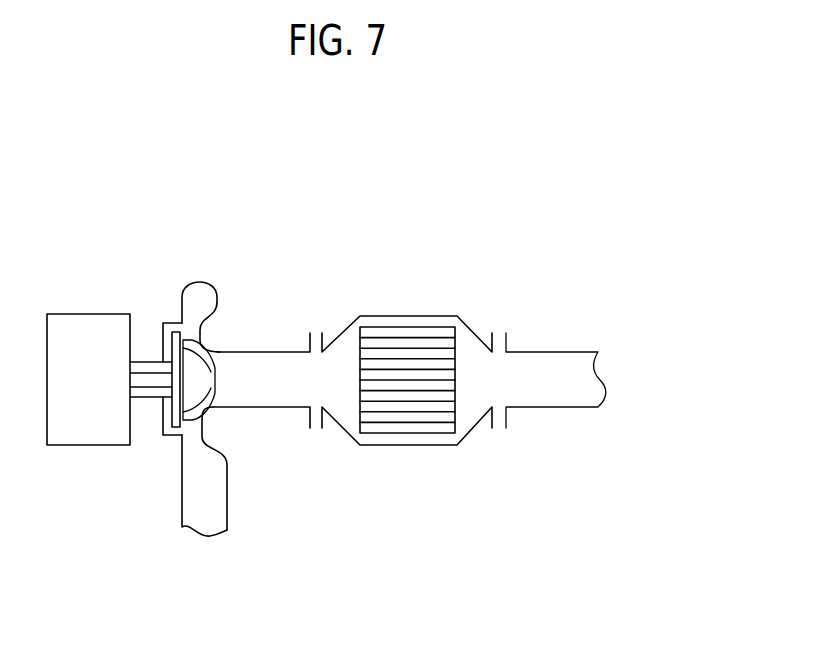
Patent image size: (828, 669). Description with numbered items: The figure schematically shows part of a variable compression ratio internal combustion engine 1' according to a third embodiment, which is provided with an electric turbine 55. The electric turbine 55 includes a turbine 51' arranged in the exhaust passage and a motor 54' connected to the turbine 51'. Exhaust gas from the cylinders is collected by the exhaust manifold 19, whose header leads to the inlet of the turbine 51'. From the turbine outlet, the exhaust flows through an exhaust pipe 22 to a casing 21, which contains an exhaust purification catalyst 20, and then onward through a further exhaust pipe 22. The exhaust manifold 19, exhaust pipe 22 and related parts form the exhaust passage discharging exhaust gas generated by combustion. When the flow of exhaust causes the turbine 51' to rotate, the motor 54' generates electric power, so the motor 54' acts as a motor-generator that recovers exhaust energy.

The internal combustion engine 1' is at (372, 347).
The exhaust manifold 19 is at (230, 510).
The exhaust purification catalyst 20 is at (413, 327).
The casing 21 is at (472, 430).
The exhaust pipe 22 is at (283, 347).
The turbine 51' is at (223, 320).
The motor 54' is at (131, 325).
The electric turbine 55 is at (293, 197).